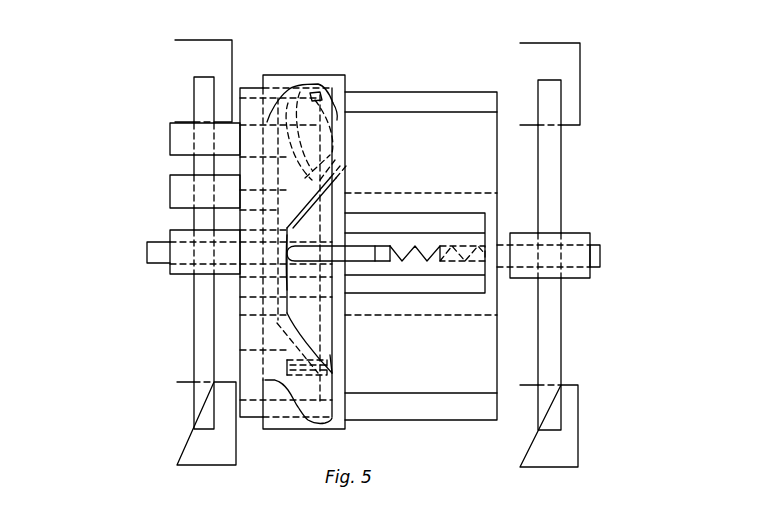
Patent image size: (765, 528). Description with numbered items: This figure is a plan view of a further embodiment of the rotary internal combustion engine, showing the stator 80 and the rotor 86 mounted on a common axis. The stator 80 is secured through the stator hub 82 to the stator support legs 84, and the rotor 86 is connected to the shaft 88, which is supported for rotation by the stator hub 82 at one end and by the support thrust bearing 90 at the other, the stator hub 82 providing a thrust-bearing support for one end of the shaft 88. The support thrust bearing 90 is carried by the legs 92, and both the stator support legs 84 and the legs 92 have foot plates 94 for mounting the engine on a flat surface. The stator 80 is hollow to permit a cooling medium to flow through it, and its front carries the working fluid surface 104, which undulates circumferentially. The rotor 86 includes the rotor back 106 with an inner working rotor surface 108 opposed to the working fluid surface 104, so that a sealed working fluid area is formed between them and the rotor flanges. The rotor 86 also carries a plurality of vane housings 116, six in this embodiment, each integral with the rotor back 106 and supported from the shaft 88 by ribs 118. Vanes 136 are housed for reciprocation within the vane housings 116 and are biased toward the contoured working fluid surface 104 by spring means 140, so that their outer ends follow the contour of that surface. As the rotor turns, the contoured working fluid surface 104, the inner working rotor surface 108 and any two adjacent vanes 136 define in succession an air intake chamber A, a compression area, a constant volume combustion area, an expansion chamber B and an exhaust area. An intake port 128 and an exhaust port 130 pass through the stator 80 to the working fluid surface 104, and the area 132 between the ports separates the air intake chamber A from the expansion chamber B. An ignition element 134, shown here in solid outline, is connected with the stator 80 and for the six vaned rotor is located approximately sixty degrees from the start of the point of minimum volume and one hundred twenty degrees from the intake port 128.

The stator 80 is at (252, 92).
The stator hub 82 is at (170, 233).
The stator support legs 84 is at (200, 338).
The rotor 86 is at (338, 80).
The shaft 88 is at (597, 257).
The support thrust bearing 90 is at (577, 238).
The legs 92 is at (553, 353).
The foot plates 94 is at (570, 452).
The working fluid surface 104 is at (318, 340).
The rotor back 106 is at (333, 368).
The inner working rotor surface 108 is at (327, 384).
The vane housings 116 is at (450, 105).
The ribs 118 is at (492, 227).
The intake port 128 is at (170, 138).
The exhaust port 130 is at (170, 188).
The area between the ports 132 is at (337, 120).
The ignition element 134 is at (287, 368).
The vanes 136 is at (375, 257).
The spring means 140 is at (418, 260).
The air intake chamber A is at (322, 85).
The expansion chamber B is at (300, 283).